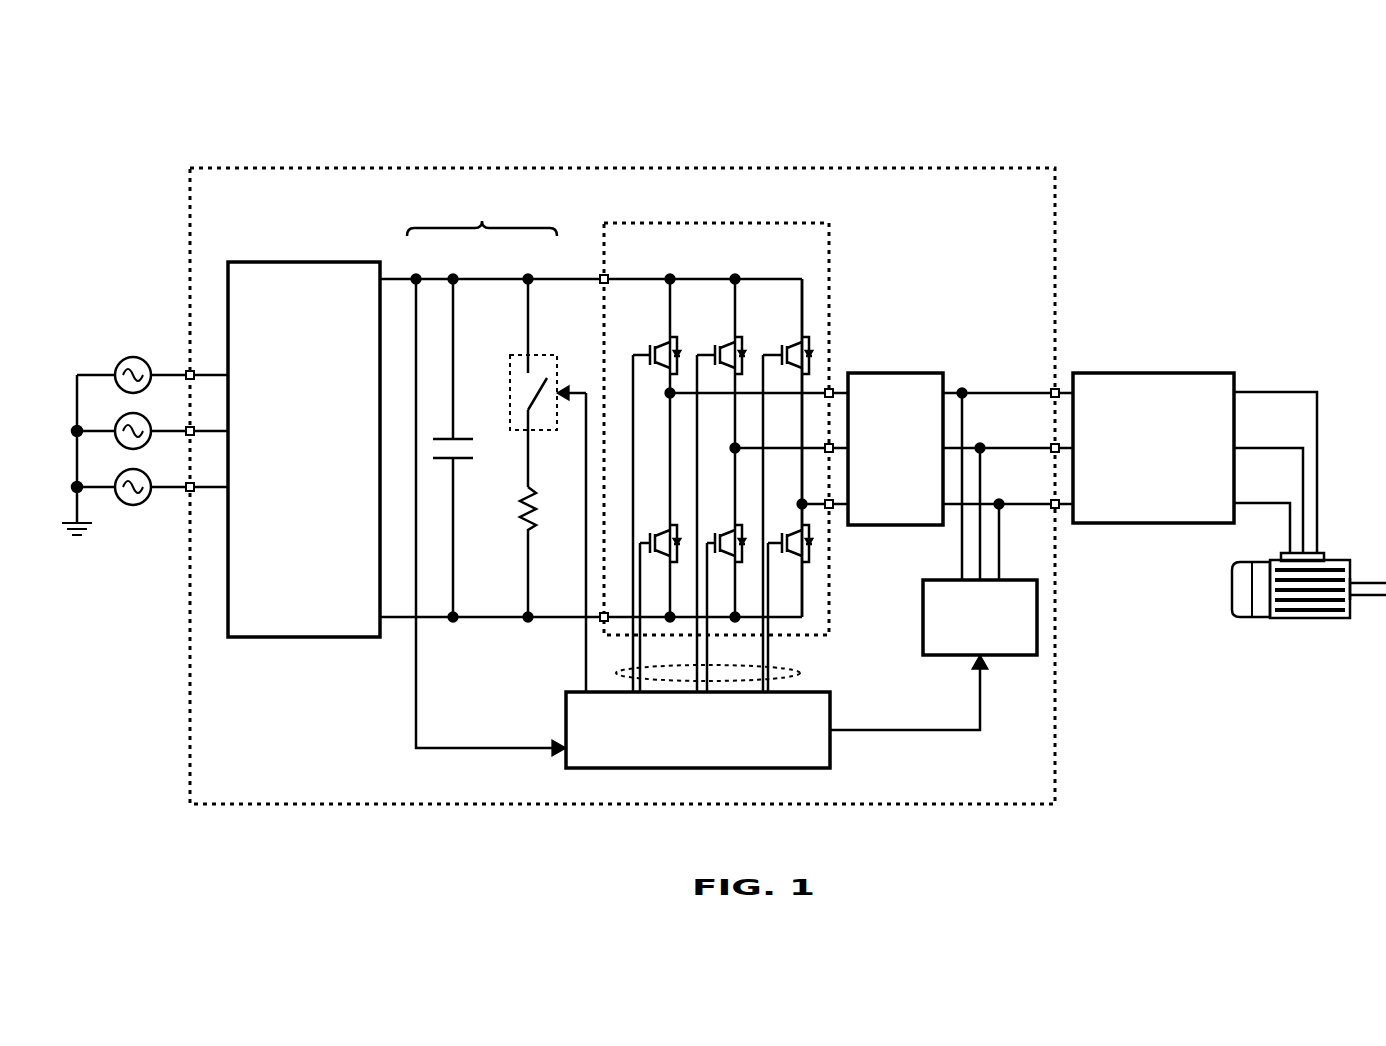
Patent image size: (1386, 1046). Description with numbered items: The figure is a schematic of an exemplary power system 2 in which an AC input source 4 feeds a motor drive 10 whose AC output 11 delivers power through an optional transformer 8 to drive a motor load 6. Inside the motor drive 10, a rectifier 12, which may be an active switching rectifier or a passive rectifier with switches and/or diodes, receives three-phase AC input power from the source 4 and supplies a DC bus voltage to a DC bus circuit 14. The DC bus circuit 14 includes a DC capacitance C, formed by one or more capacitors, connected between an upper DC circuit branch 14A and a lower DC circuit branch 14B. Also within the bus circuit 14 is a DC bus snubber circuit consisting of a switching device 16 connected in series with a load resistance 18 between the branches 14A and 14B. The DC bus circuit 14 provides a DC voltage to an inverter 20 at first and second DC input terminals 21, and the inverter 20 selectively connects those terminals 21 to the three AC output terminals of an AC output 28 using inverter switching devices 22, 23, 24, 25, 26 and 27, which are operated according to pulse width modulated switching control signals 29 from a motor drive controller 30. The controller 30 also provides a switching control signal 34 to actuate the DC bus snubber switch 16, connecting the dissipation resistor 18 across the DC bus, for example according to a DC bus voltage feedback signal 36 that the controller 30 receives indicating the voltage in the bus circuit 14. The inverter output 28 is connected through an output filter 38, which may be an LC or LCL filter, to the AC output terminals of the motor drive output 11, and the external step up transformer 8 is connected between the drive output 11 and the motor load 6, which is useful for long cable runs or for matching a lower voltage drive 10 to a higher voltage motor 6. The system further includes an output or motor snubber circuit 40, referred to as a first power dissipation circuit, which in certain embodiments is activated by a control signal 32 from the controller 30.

The power system 2 is at (152, 74).
The AC input source 4 is at (94, 356).
The motor load 6 is at (1232, 587).
The transformer 8 is at (1152, 373).
The motor drive 10 is at (215, 166).
The AC output 11 is at (1047, 382).
The rectifier 12 is at (302, 262).
The DC bus circuit 14 is at (591, 408).
The upper DC circuit branch 14A is at (510, 279).
The lower DC circuit branch 14B is at (510, 617).
The switching device 16 is at (514, 352).
The load resistance 18 is at (515, 552).
The inverter 20 is at (716, 221).
The DC input terminals 21 is at (598, 274).
The inverter switching device 22 is at (656, 485).
The inverter switching device 23 is at (721, 485).
The inverter switching device 24 is at (787, 485).
The inverter switching device 25 is at (658, 542).
The inverter switching device 26 is at (723, 570).
The inverter switching device 27 is at (790, 598).
The AC output 28 is at (839, 373).
The switching control signals 29 is at (782, 672).
The motor drive controller 30 is at (567, 711).
The control signal 32 is at (982, 692).
The switching control signal 34 is at (586, 655).
The DC bus voltage feedback signal 36 is at (418, 711).
The output filter 38 is at (897, 373).
The motor snubber circuit 40 is at (925, 617).
The DC capacitance C is at (449, 448).